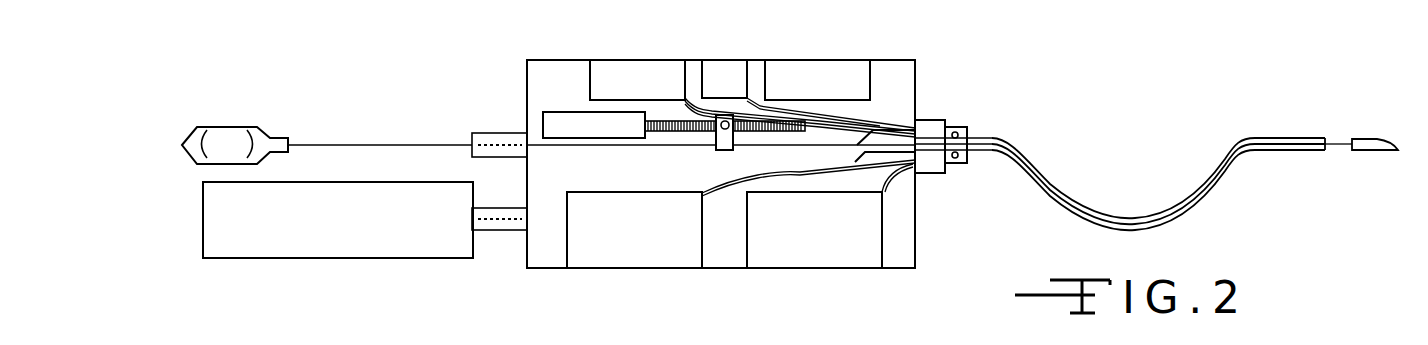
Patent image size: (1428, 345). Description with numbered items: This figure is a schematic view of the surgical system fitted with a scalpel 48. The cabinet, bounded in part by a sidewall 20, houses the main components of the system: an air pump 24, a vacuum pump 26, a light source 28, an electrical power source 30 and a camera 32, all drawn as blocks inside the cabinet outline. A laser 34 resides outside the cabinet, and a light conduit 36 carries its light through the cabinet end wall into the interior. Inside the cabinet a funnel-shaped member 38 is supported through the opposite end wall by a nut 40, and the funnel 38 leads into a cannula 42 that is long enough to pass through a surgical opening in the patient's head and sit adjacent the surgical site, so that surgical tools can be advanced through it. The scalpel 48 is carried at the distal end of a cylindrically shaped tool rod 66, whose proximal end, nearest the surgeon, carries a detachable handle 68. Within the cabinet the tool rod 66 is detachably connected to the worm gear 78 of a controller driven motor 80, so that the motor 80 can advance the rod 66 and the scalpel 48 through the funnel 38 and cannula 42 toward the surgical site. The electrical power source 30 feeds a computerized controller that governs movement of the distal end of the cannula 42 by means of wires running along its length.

The sidewall 20 is at (679, 202).
The air pump 24 is at (840, 82).
The vacuum pump 26 is at (717, 82).
The light source 28 is at (620, 78).
The electrical power source 30 is at (840, 245).
The camera 32 is at (633, 237).
The laser 34 is at (348, 242).
The light conduit 36 is at (498, 235).
The funnel-shaped member 38 is at (857, 162).
The nut 40 is at (933, 127).
The cannula 42 is at (1025, 170).
The scalpel 48 is at (1370, 143).
The tool rod 66 is at (833, 145).
The detachable handle 68 is at (230, 137).
The worm gear 78 is at (762, 122).
The motor 80 is at (543, 112).